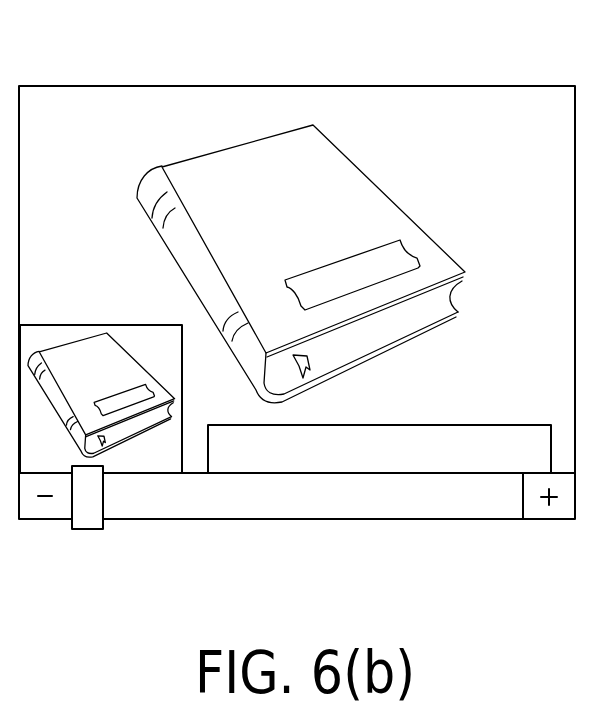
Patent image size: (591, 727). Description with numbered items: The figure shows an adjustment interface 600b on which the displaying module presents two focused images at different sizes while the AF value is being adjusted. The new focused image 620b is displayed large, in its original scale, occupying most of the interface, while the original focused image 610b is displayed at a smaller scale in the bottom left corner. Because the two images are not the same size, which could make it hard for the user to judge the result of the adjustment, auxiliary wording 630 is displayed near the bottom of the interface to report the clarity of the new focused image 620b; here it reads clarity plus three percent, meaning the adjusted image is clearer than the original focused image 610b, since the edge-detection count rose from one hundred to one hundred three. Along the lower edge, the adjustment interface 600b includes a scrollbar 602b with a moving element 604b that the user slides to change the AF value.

The adjustment interface 600b is at (71, 85).
The new focused image 620b is at (512, 108).
The focused image 610b is at (85, 323).
The auxiliary wording 630 is at (492, 423).
The scrollbar 602b is at (437, 500).
The moving element 604b is at (87, 507).